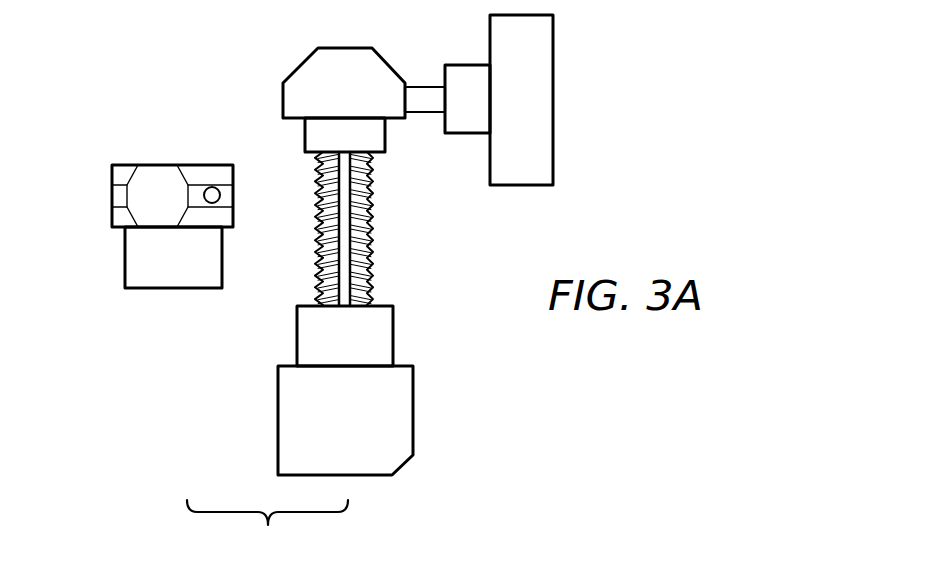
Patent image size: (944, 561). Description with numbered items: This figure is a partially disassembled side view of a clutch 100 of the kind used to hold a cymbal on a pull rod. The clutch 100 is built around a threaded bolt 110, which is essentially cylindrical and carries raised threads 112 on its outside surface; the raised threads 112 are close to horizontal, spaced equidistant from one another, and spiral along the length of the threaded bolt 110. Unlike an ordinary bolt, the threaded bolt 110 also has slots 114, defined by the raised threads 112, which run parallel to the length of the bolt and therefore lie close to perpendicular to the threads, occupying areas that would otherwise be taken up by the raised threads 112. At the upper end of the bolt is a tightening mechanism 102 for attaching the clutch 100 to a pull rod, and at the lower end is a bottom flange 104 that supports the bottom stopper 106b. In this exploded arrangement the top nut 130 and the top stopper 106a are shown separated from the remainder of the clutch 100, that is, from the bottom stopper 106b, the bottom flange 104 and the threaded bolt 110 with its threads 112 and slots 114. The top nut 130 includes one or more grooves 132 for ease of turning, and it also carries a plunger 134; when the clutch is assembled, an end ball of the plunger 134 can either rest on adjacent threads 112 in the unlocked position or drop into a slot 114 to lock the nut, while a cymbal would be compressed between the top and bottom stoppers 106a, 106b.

The clutch 100 is at (200, 46).
The tightening mechanism 102 is at (555, 72).
The bottom flange 104 is at (278, 398).
The top stopper 106a is at (173, 288).
The bottom stopper 106b is at (393, 333).
The threaded bolt 110 is at (362, 257).
The raised threads 112 is at (370, 158).
The slots 114 is at (347, 275).
The top nut 130 is at (135, 165).
The grooves 132 is at (137, 197).
The plunger 134 is at (212, 188).